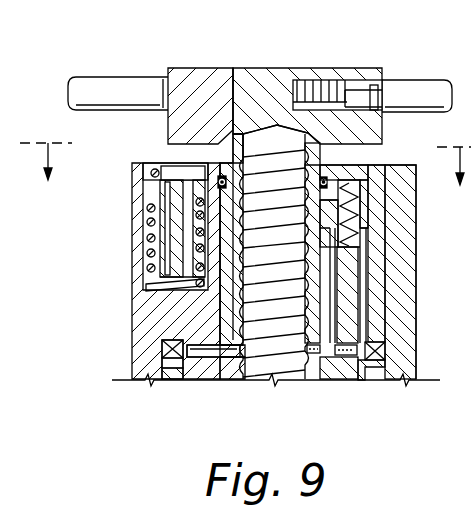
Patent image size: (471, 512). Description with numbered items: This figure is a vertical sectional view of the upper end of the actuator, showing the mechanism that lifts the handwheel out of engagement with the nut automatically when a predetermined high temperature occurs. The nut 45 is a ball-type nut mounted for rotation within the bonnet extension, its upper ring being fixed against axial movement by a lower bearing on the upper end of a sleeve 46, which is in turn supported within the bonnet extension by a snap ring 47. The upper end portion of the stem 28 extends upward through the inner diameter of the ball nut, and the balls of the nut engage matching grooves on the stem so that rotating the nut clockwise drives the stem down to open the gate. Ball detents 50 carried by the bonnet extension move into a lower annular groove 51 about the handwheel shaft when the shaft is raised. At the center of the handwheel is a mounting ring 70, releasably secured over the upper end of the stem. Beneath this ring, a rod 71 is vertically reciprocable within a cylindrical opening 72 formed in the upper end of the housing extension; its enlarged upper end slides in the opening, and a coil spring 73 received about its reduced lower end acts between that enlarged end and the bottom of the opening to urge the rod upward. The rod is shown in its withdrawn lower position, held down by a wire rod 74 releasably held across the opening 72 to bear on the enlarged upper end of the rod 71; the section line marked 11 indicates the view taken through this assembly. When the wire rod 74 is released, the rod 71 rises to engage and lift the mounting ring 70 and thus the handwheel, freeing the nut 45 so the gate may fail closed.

The section line 11- 11 is at (245, 186).
The stem 28 is at (268, 363).
The nut 45 is at (387, 363).
The sleeve 46 is at (213, 356).
The snap ring 47 is at (325, 358).
The ball detents 50 is at (370, 273).
The lower annular groove 51 is at (348, 355).
The mounting ring 70 is at (383, 72).
The rod 71 is at (160, 242).
The cylindrical opening 72 is at (150, 204).
The coil spring 73 is at (150, 274).
The wire rod 74 is at (155, 168).